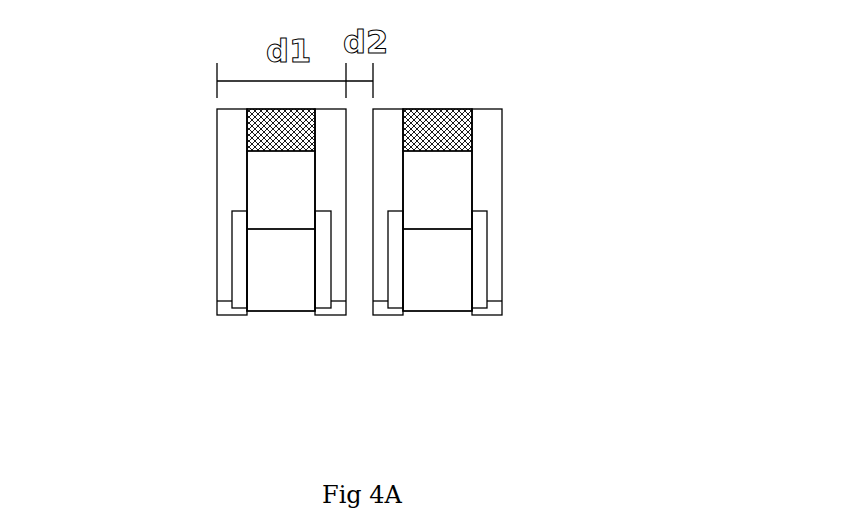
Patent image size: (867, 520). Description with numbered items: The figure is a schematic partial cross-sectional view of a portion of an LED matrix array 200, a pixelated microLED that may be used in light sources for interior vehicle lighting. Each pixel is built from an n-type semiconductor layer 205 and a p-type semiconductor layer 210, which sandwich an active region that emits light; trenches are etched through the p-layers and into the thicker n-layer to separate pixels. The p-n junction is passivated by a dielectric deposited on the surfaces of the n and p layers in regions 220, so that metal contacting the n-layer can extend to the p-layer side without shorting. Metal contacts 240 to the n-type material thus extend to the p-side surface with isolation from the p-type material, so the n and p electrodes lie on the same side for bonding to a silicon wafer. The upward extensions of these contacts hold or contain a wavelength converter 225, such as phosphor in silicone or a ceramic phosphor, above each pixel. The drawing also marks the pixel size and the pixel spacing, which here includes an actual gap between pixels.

The LED matrix array 200 is at (372, 214).
The n-type semiconductor layer 205 is at (258, 175).
The p-type semiconductor layer 210 is at (259, 264).
The dielectric regions 220 is at (475, 360).
The wavelength converter 225 is at (429, 128).
The metal contacts 240 is at (483, 192).